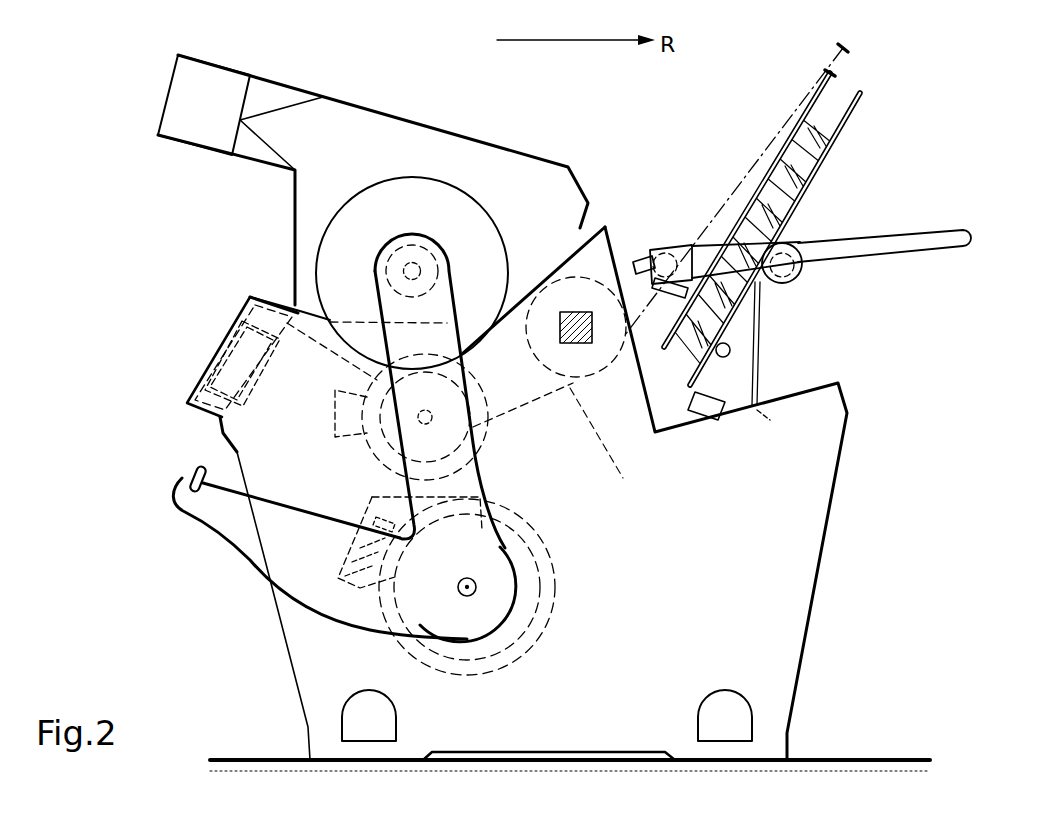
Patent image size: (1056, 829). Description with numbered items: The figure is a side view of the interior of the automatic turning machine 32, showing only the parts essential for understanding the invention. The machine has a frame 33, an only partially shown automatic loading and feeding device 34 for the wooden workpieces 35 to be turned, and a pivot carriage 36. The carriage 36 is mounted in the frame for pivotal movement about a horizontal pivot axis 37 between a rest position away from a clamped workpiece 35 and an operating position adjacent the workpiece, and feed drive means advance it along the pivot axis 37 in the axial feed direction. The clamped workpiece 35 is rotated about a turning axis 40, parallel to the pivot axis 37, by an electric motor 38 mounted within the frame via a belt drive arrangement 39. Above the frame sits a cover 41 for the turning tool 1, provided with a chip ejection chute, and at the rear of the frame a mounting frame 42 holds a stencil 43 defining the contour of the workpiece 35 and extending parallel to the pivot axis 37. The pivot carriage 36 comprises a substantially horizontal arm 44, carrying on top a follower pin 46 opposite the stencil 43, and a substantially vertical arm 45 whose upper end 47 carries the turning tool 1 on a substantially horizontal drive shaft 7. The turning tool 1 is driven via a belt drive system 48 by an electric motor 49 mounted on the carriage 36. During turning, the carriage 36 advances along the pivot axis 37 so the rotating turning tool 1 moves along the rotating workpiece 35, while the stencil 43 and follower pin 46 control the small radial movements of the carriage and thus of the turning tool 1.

The turning tool 1 is at (368, 213).
The drive shaft 7 is at (412, 262).
The automatic turning machine 32 is at (834, 232).
The frame 33 is at (752, 522).
The automatic loading and feeding device 34 is at (808, 219).
The wooden workpiece 35 is at (587, 310).
The pivot carriage 36 is at (363, 495).
The pivot axis 37 is at (470, 590).
The electric motor 38 is at (247, 297).
The belt drive arrangement 39 is at (615, 442).
The turning axis 40 is at (576, 320).
The cover 41 is at (362, 130).
The bearing block 42 is at (232, 348).
The stencil 43 is at (222, 440).
The horizontal arm 44 is at (310, 545).
The vertical arm 45 is at (467, 477).
The follower pin 46 is at (200, 466).
The upper end 47 is at (423, 310).
The belt drive system 48 is at (468, 305).
The electric motor 49 is at (563, 623).